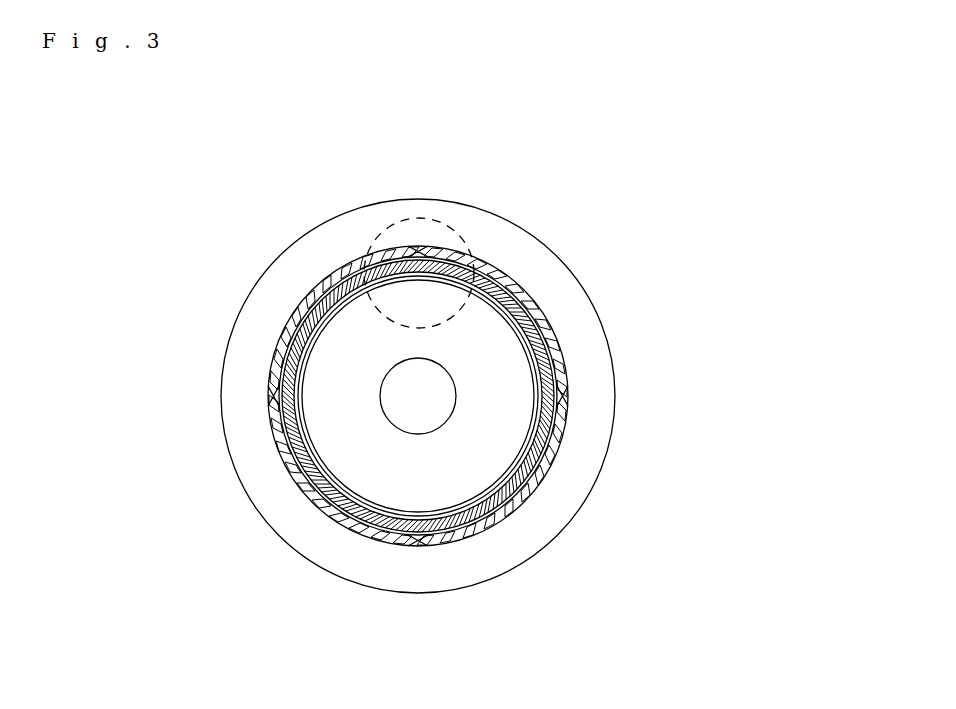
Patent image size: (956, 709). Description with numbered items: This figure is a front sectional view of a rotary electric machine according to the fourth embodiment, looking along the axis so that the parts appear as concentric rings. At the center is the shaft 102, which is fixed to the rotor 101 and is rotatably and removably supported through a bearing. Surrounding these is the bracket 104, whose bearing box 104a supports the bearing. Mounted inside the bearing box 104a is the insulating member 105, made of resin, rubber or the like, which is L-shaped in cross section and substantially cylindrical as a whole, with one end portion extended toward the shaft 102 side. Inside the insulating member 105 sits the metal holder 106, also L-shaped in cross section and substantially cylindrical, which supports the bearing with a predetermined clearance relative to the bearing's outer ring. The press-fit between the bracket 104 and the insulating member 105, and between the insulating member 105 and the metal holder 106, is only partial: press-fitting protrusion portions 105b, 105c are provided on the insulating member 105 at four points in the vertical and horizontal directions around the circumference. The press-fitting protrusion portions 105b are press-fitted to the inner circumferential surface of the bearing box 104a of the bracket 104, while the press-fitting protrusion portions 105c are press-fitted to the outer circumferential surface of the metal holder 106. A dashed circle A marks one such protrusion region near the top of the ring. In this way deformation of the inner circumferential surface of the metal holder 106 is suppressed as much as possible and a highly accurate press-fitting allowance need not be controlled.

The rotor 101 is at (343, 337).
The shaft 102 is at (413, 397).
The bracket 104 is at (510, 219).
The bearing box 104a is at (533, 287).
The insulating member 105 is at (530, 498).
The press-fitting protrusion portions 105b is at (423, 244).
The press-fitting protrusion portions 105c is at (413, 245).
The metal holder 106 is at (555, 463).
The enlarged region A is at (434, 222).